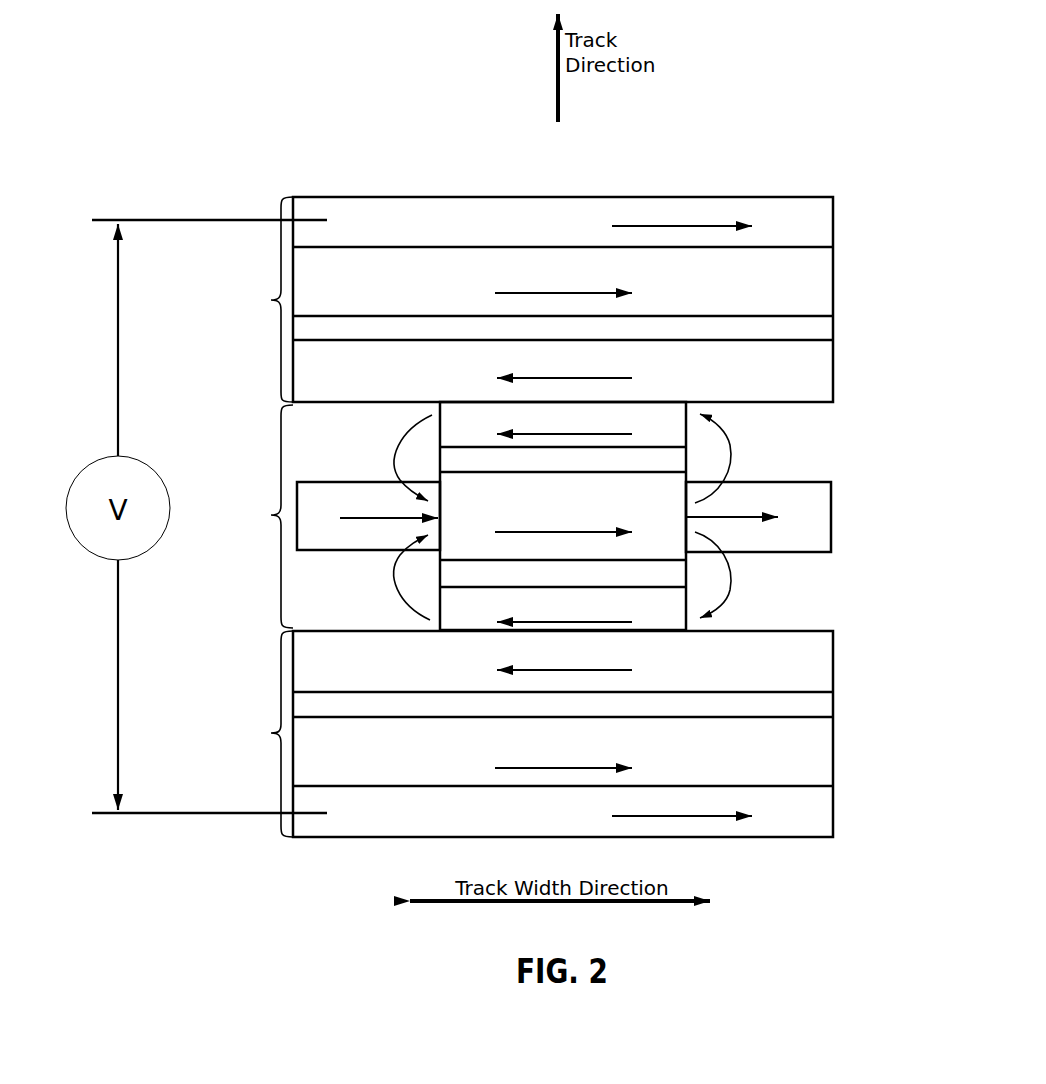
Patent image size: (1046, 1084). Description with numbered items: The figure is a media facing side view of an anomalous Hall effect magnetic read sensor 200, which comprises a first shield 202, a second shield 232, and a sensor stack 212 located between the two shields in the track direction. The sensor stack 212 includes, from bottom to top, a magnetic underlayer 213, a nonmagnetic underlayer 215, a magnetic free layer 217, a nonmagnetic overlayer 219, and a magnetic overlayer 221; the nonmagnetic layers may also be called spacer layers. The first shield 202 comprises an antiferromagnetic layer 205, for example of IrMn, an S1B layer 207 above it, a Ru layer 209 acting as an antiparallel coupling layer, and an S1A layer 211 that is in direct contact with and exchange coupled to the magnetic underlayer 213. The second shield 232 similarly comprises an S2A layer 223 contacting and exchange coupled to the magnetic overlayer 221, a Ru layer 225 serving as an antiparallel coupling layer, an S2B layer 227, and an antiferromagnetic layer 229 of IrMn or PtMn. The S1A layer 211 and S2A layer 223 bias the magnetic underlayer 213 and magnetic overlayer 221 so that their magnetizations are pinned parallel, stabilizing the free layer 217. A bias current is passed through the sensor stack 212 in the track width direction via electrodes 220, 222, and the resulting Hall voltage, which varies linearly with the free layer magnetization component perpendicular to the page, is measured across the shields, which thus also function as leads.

The sensor 200 is at (304, 848).
The first shield 202 is at (531, 734).
The antiferromagnetic layer 205 is at (772, 838).
The shield 1B (S1B) layer 207 is at (834, 735).
The Ru layer 209 is at (834, 700).
The shield 1A (S1A) layer 211 is at (760, 630).
The sensor stack 212 is at (458, 516).
The magnetic underlayer 213 is at (563, 608).
The nonmagnetic underlayer 215 is at (563, 573).
The magnetic free layer 217 is at (563, 516).
The nonmagnetic overlayer 219 is at (563, 461).
The electrode 220 is at (378, 481).
The magnetic overlayer 221 is at (563, 426).
The electrode 222 is at (800, 481).
The shield 2A (S2A) layer 223 is at (800, 403).
The Ru layer 225 is at (834, 326).
The shield 2B (S2B) layer 227 is at (834, 290).
The antiferromagnetic layer 229 is at (786, 197).
The second shield 232 is at (531, 299).